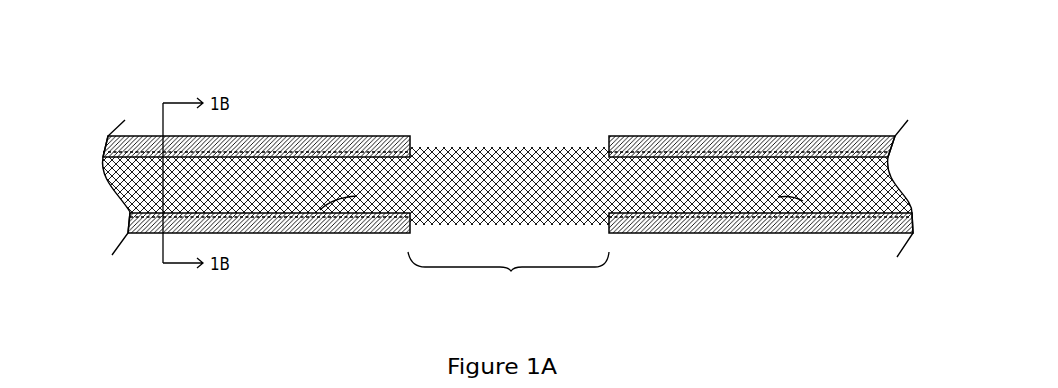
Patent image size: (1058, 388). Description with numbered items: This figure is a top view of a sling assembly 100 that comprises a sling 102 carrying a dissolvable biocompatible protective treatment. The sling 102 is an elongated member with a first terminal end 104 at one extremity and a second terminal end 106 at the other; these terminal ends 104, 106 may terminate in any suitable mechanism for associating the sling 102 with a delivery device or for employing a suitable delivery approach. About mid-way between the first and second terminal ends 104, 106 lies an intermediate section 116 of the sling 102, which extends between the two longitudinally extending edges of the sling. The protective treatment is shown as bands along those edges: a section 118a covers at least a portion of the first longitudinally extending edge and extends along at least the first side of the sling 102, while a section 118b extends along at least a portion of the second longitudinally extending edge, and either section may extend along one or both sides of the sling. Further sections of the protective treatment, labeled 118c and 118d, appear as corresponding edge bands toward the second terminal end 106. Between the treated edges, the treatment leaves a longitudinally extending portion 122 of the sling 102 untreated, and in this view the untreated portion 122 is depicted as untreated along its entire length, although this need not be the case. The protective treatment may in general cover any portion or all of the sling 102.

The sling assembly 100 is at (504, 161).
The sling 102 is at (502, 117).
The first terminal end 104 is at (117, 203).
The second terminal end 106 is at (887, 172).
The intermediate section 116 is at (511, 271).
The protective treatment section 118a is at (360, 136).
The protective treatment section 118b is at (360, 233).
The third electrode layer 118c is at (732, 136).
The fourth electrode layer 118d is at (732, 233).
The longitudinally extending untreated portion 122 is at (316, 233).